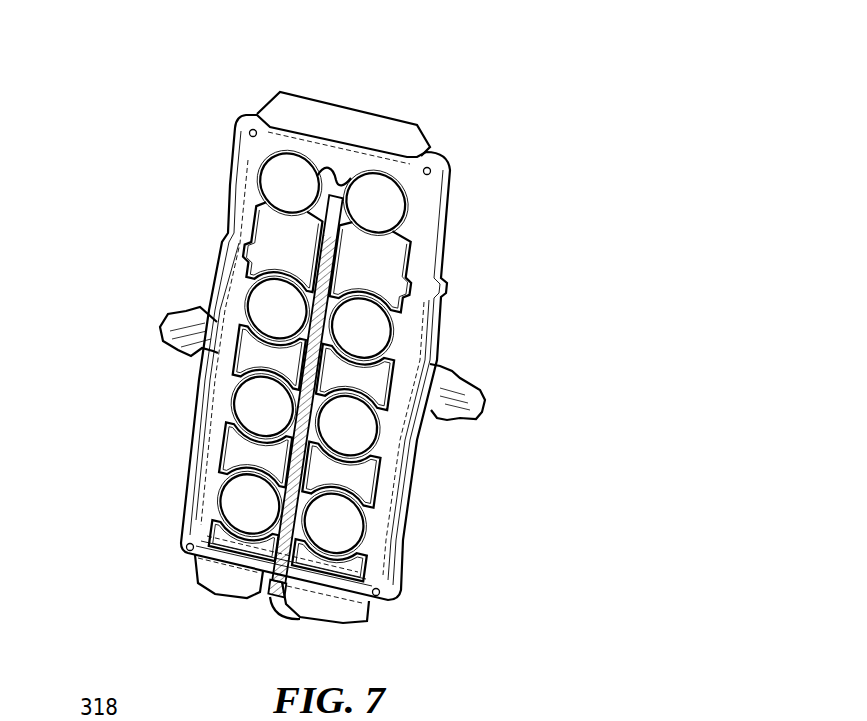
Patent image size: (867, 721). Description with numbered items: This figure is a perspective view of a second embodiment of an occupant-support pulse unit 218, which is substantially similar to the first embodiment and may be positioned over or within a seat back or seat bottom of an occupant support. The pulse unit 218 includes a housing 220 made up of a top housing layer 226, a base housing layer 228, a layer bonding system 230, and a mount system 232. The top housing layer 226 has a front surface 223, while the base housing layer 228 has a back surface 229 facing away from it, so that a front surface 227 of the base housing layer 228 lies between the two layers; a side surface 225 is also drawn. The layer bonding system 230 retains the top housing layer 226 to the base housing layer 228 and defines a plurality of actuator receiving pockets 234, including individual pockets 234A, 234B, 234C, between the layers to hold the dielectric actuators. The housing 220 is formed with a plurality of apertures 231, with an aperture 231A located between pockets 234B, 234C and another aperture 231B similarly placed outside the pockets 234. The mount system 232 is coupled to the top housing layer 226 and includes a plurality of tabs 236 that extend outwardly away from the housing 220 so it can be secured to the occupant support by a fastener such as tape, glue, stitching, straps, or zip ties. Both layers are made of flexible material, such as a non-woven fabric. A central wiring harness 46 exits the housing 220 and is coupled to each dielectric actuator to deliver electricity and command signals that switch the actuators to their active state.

The occupant-support pulse unit 218 is at (172, 98).
The housing 220 is at (183, 208).
The front surface 223 is at (240, 126).
The side wall 225 is at (437, 332).
The top housing layer 226 is at (236, 156).
The front surface 227 is at (443, 296).
The base housing layer 228 is at (450, 160).
The back surface 229 is at (453, 198).
The layer bonding system 230 is at (218, 285).
The plurality of apertures 231 is at (374, 266).
The aperture 231A is at (341, 475).
The second slot 231B is at (355, 377).
The mount system 232 is at (278, 86).
The plurality of actuator receiving pockets 234 is at (244, 540).
The first retention feature 234A is at (255, 454).
The actuator receiving pocket 234B is at (329, 560).
The actuator receiving pocket 234C is at (341, 475).
The plurality of tabs 236 is at (338, 116).
The central wiring harness 46 is at (277, 589).